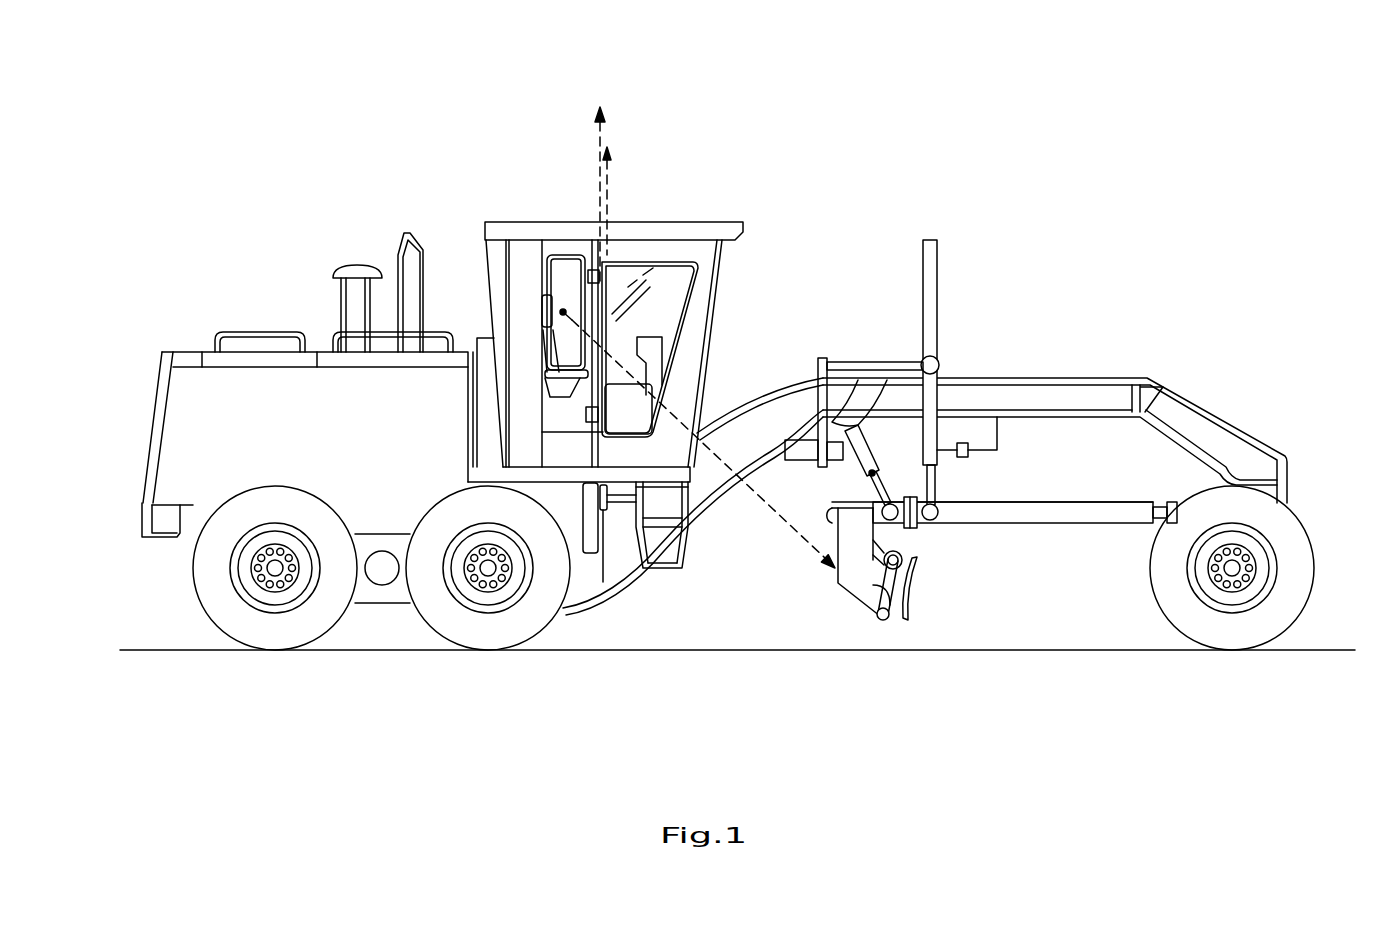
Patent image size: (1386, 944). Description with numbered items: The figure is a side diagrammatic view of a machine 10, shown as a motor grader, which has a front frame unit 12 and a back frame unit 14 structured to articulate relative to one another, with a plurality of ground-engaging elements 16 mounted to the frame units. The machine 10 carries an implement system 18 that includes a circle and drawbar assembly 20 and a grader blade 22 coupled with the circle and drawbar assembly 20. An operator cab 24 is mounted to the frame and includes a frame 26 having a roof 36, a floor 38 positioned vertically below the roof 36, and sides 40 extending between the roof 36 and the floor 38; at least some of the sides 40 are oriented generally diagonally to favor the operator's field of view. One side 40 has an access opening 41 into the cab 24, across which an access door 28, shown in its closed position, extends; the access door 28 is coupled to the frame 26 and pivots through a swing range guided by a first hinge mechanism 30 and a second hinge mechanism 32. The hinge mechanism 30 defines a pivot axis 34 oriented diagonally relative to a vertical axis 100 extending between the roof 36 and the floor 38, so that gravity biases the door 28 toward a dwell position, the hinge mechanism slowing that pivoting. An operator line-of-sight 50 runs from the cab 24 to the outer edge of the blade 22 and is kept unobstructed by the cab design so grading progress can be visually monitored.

The machine 10 is at (808, 200).
The front frame unit 12 is at (382, 595).
The back frame unit 14 is at (1057, 378).
The ground-engaging elements 16 is at (282, 640).
The implement system 18 is at (820, 483).
The circle and drawbar assembly 20 is at (830, 578).
The grader blade 22 is at (908, 622).
The operator cab 24 is at (492, 278).
The frame 26 is at (616, 327).
The access door 28 is at (665, 260).
The first hinge mechanism 30 is at (588, 275).
The second hinge mechanism 32 is at (588, 415).
The pivot axis 34 is at (608, 175).
The roof 36 is at (740, 226).
The floor 38 is at (510, 473).
The sides 40 is at (688, 375).
The access opening 41 is at (657, 290).
The line-of-sight 50 is at (680, 525).
The vertical axis 100 is at (598, 140).